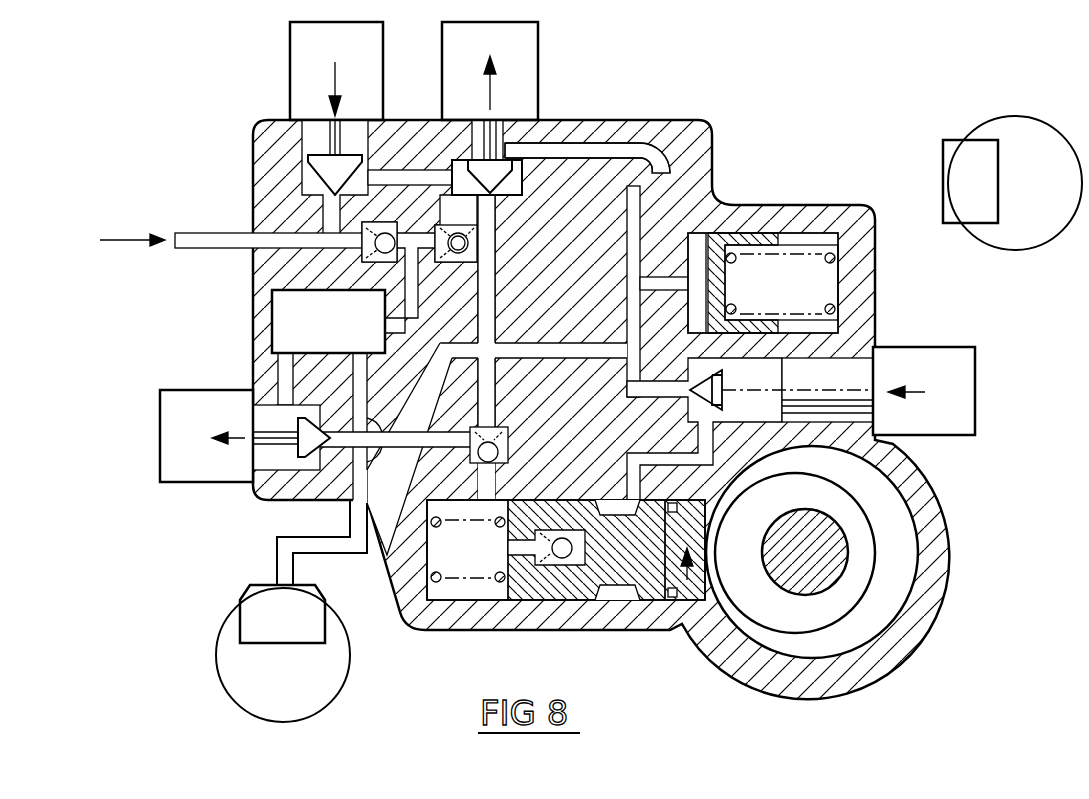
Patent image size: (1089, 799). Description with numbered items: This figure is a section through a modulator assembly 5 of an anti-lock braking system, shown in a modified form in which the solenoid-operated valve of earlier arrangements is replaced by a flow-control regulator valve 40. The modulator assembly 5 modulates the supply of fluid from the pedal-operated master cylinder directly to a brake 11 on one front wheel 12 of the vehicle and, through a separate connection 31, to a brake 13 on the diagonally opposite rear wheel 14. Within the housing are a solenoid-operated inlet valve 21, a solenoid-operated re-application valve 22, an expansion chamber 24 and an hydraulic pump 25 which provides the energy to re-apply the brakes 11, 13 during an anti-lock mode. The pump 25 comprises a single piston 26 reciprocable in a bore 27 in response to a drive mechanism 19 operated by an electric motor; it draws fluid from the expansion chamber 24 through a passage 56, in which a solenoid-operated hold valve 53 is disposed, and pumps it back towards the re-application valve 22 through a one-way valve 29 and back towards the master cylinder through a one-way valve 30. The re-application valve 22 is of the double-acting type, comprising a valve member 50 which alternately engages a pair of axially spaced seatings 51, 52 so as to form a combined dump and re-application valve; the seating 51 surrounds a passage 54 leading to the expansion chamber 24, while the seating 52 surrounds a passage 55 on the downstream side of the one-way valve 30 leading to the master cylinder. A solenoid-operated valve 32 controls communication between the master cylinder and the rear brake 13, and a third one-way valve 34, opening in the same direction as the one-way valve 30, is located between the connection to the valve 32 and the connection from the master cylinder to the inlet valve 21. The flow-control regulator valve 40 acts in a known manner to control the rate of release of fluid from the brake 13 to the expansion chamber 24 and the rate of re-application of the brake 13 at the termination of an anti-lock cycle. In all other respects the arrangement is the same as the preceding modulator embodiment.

The modulator assembly 5 is at (458, 604).
The brake 11 is at (962, 165).
The front wheel 12 is at (1036, 240).
The brake 13 is at (268, 615).
The rear wheel 14 is at (265, 670).
The drive mechanism 19 is at (800, 560).
The solenoid-operated inlet valve 21 is at (302, 68).
The solenoid-operated re-application valve 22 is at (458, 68).
The expansion chamber 24 is at (712, 250).
The hydraulic pump 25 is at (692, 605).
The piston 26 is at (585, 585).
The bore 27 is at (530, 610).
The one-way valve 29 is at (500, 447).
The one-way valve 30 is at (462, 262).
The connection 31 is at (303, 548).
The solenoid-operated valve 32 is at (180, 440).
The third one-way valve 34 is at (380, 252).
The flow-control regulator valve 40 is at (290, 312).
The valve member 50 is at (528, 138).
The seating 51 is at (462, 168).
The seating 52 is at (460, 228).
The solenoid-operated hold valve 53 is at (918, 355).
The passage 54 is at (622, 145).
The passage 55 is at (488, 226).
The passage 56 is at (700, 415).